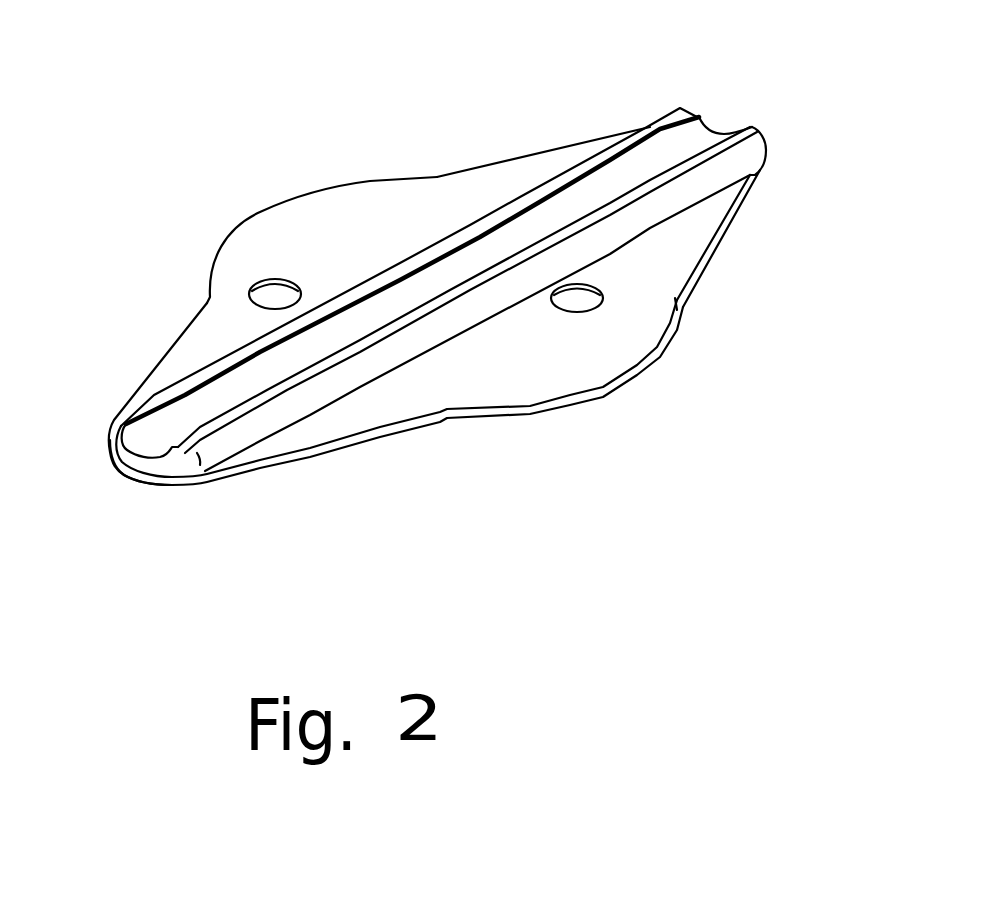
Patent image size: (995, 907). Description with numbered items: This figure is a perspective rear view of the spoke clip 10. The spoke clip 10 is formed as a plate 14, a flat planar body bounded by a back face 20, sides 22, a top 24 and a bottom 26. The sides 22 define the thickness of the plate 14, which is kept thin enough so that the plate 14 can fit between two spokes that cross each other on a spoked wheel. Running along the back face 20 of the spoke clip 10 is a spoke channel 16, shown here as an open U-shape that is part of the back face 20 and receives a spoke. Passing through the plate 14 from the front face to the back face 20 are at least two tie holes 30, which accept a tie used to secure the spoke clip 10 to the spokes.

The spoke clip 10 is at (413, 560).
The plate 14 is at (437, 177).
The spoke channel 16 is at (702, 116).
The back face 20 is at (370, 227).
The sides 22 is at (692, 323).
The top 24 is at (766, 152).
The bottom 26 is at (137, 481).
The tie holes 30 is at (266, 290).